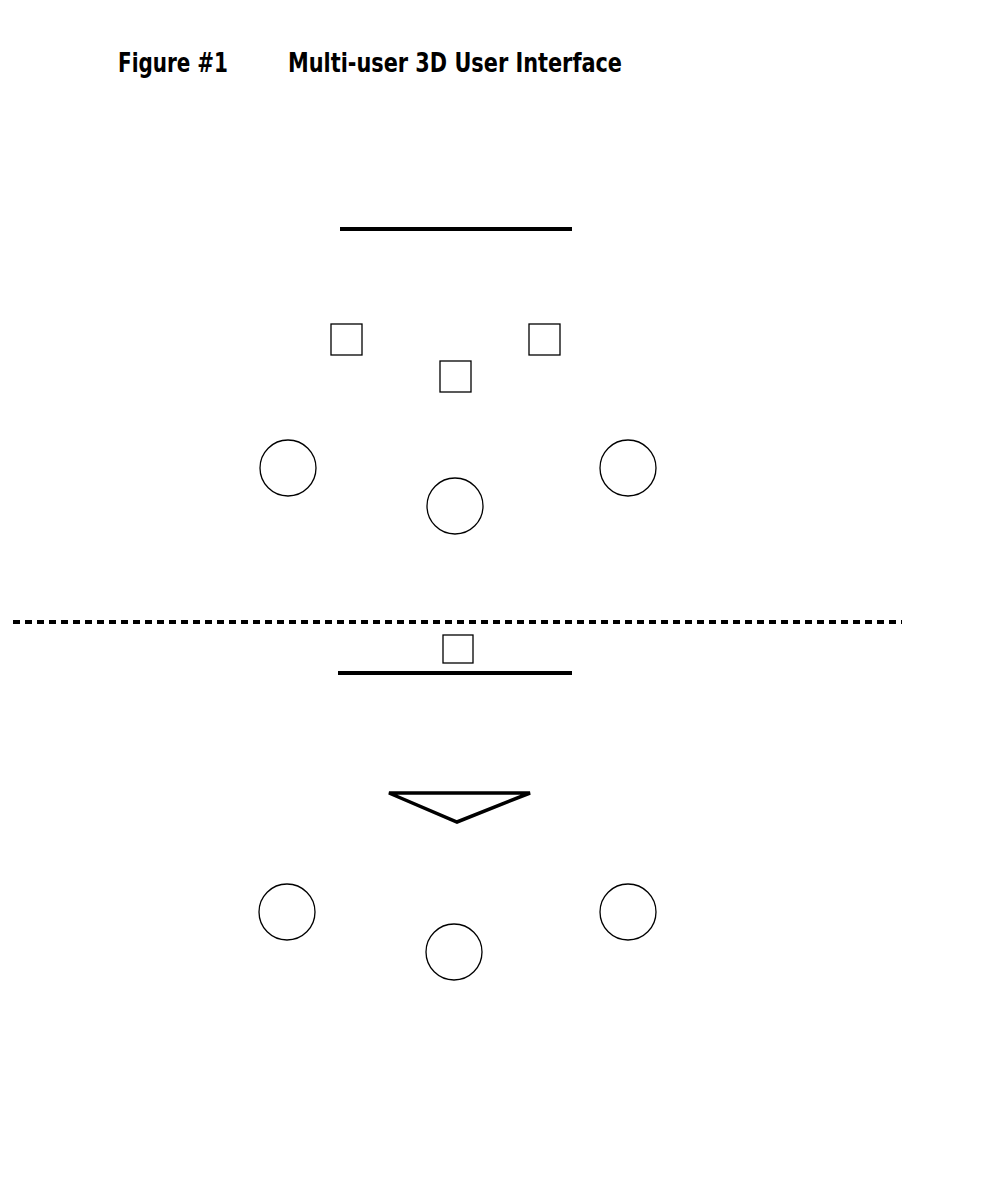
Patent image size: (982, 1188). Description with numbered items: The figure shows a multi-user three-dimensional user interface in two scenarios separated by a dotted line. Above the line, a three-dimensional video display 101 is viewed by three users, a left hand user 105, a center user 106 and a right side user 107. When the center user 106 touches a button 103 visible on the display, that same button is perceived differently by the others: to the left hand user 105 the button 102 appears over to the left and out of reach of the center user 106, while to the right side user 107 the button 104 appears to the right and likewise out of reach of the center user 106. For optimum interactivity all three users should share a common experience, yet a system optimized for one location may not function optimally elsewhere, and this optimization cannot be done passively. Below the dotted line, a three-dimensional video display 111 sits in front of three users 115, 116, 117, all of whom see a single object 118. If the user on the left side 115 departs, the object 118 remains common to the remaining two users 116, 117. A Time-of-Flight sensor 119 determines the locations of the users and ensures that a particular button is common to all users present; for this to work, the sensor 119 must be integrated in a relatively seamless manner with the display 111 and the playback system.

The 3D video display 101 is at (543, 237).
The button 102 is at (340, 338).
The button 103 is at (455, 379).
The button 104 is at (543, 342).
The left hand user 105 is at (283, 470).
The center user 106 is at (455, 506).
The right side user 107 is at (628, 470).
The 3D video display 111 is at (543, 680).
The user on the left side 115 is at (282, 911).
The user 116 is at (455, 953).
The user 117 is at (628, 912).
The single object 118 is at (457, 810).
The Time-of-Flight sensor 119 is at (457, 650).